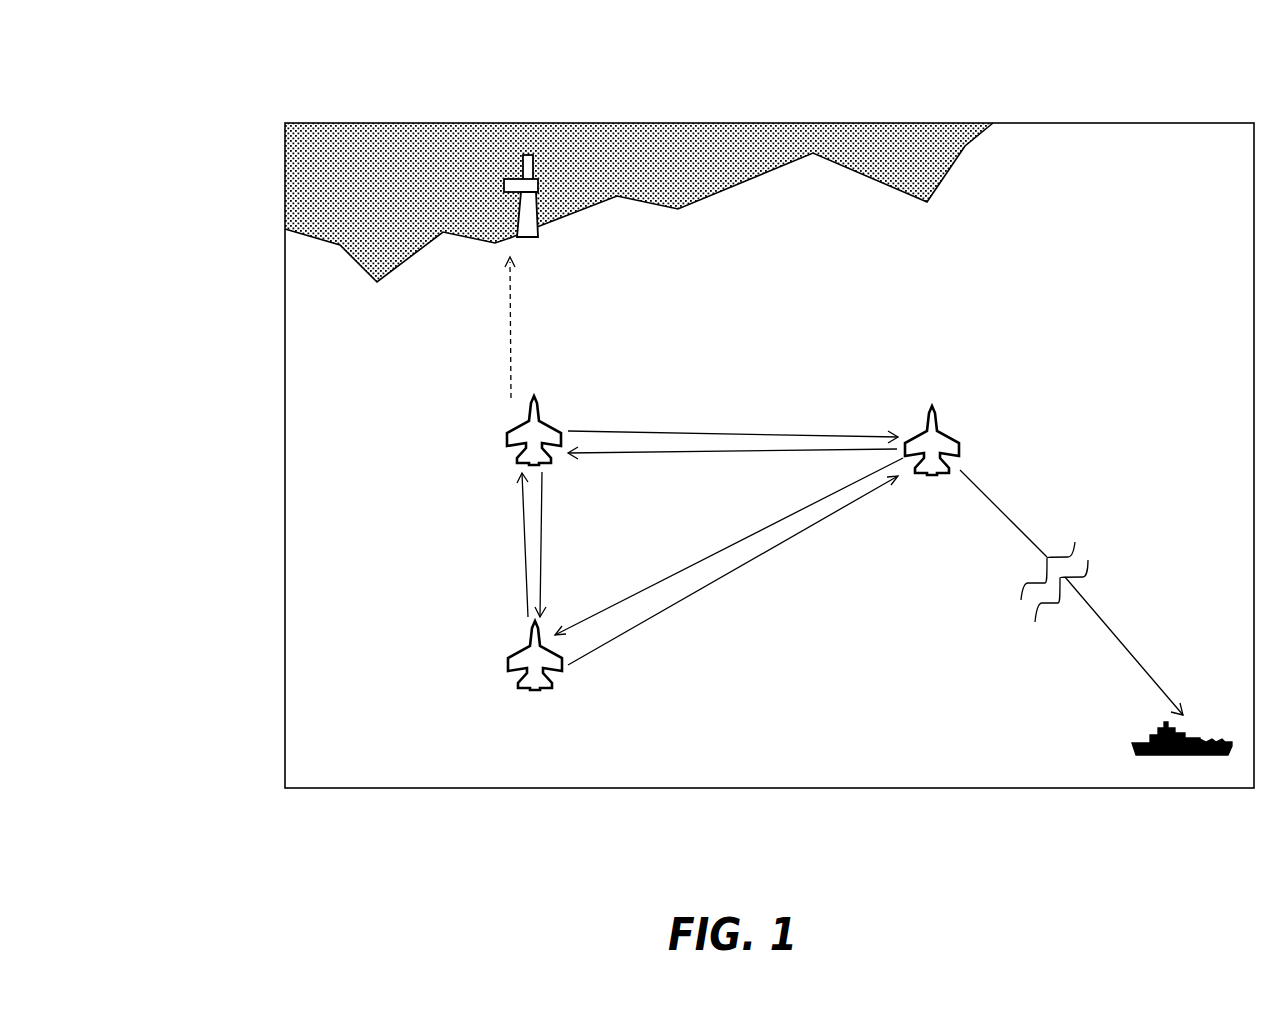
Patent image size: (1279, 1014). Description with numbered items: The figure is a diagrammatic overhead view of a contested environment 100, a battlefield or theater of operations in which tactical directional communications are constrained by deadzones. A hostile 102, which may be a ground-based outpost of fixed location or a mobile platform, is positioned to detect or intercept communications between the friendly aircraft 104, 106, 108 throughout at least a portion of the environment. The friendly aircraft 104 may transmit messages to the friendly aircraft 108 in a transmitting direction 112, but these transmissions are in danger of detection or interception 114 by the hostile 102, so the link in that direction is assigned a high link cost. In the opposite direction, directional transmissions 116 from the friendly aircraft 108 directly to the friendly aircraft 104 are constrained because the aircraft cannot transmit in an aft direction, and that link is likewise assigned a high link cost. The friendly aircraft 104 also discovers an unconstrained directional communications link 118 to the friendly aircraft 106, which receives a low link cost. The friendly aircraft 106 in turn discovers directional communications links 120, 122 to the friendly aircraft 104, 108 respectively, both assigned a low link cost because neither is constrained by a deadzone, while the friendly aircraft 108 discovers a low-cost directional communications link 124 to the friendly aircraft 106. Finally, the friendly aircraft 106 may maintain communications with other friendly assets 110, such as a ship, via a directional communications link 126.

The contested environment 100 is at (201, 77).
The hostile 102 is at (537, 198).
The friendly aircraft 104 is at (510, 665).
The friendly aircraft 106 is at (945, 435).
The friendly aircraft 108 is at (523, 423).
The friendly assets 110 is at (1132, 744).
The transmitting direction / directional communications link 112 is at (525, 565).
The detection/interception 114 is at (510, 275).
The directional transmissions / directional communications link 116 is at (542, 530).
The directional communications link 118 is at (670, 608).
The directional communications link 120 is at (675, 577).
The directional communications link 122 is at (702, 452).
The directional communications link 124 is at (658, 432).
The directional communications link 126 is at (1020, 528).